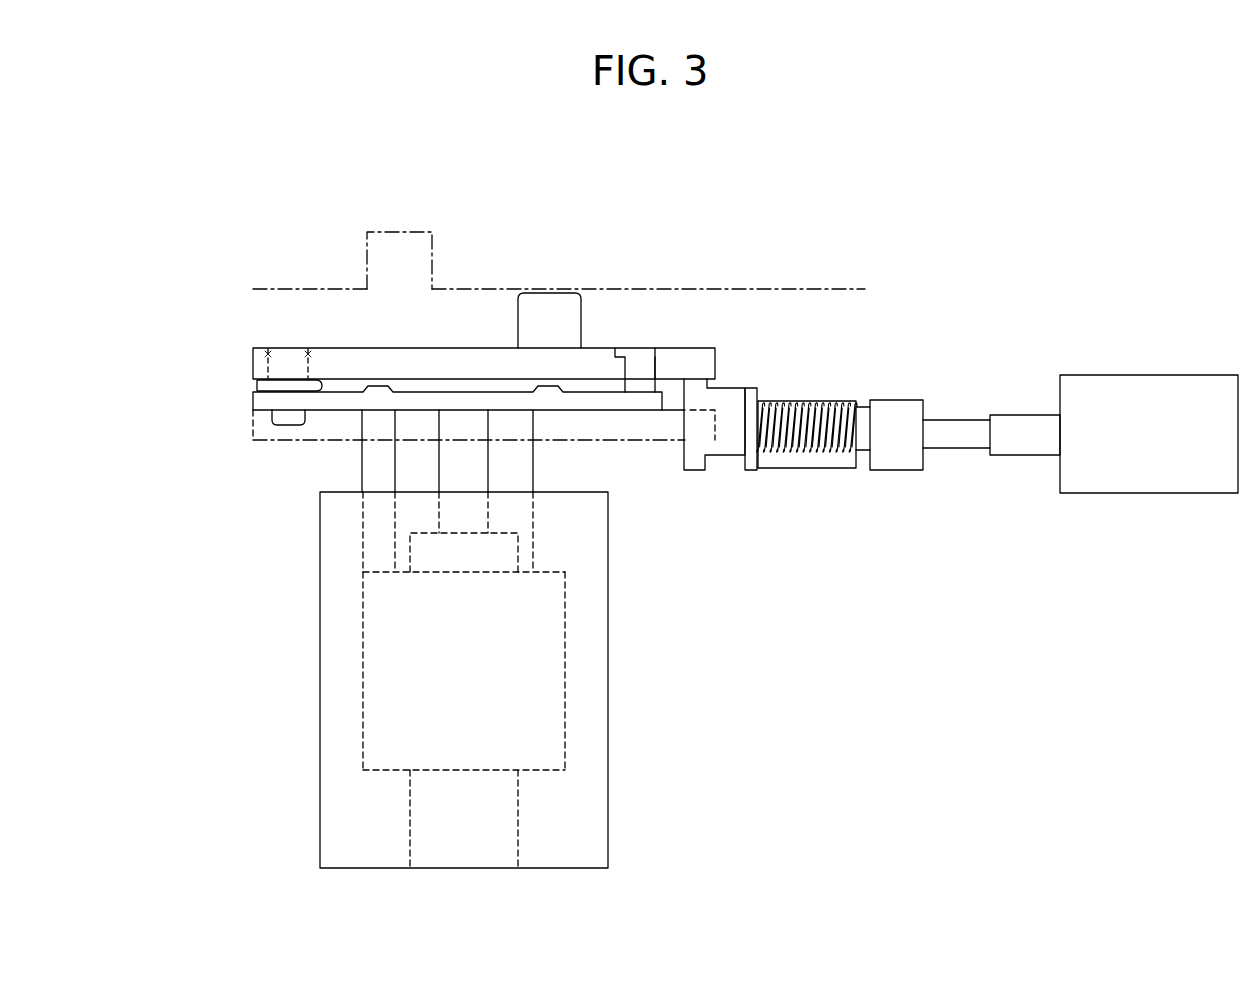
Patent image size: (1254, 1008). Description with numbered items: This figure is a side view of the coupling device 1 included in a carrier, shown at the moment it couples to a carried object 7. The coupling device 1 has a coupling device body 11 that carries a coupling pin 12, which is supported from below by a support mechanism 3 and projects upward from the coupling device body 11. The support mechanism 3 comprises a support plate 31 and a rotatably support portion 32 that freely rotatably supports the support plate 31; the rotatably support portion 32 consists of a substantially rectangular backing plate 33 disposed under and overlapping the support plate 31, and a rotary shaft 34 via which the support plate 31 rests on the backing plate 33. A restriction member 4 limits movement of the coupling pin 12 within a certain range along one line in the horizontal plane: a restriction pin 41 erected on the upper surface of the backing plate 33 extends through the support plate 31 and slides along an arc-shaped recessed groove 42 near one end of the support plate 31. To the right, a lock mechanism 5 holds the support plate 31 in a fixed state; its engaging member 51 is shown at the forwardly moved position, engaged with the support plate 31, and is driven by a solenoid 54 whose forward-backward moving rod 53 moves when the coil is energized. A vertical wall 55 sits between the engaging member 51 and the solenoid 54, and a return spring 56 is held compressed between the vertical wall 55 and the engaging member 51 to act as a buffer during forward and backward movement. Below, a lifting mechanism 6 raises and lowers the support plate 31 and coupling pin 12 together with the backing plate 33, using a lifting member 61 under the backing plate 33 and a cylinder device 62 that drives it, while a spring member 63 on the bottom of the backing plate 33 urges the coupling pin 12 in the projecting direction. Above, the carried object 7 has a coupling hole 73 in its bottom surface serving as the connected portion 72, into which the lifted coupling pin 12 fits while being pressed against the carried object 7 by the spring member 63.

The coupling device 1 is at (843, 328).
The support mechanism 3 is at (242, 408).
The restriction member 4 is at (712, 343).
The lock mechanism 5 is at (957, 483).
The lifting mechanism 6 is at (460, 679).
The carried object 7 is at (715, 290).
The coupling device body 11 is at (333, 668).
The coupling pin 12 is at (572, 313).
The support plate 31 is at (479, 353).
The rotatably support portion 32 is at (206, 351).
The backing plate 33 is at (252, 400).
The rotary shaft 34 is at (290, 350).
The restriction pin 41 is at (645, 352).
The recessed groove 42 is at (656, 359).
The engaging member 51 is at (697, 470).
The forward-backward moving rod 53 is at (957, 448).
The solenoid 54 is at (1143, 493).
The vertical wall 55 is at (900, 470).
The return spring 56 is at (833, 470).
The lifting member 61 is at (362, 518).
The cylinder device 62 is at (567, 742).
The spring member 63 is at (489, 513).
The connected portion 72 is at (433, 236).
The coupling hole 73 is at (372, 297).